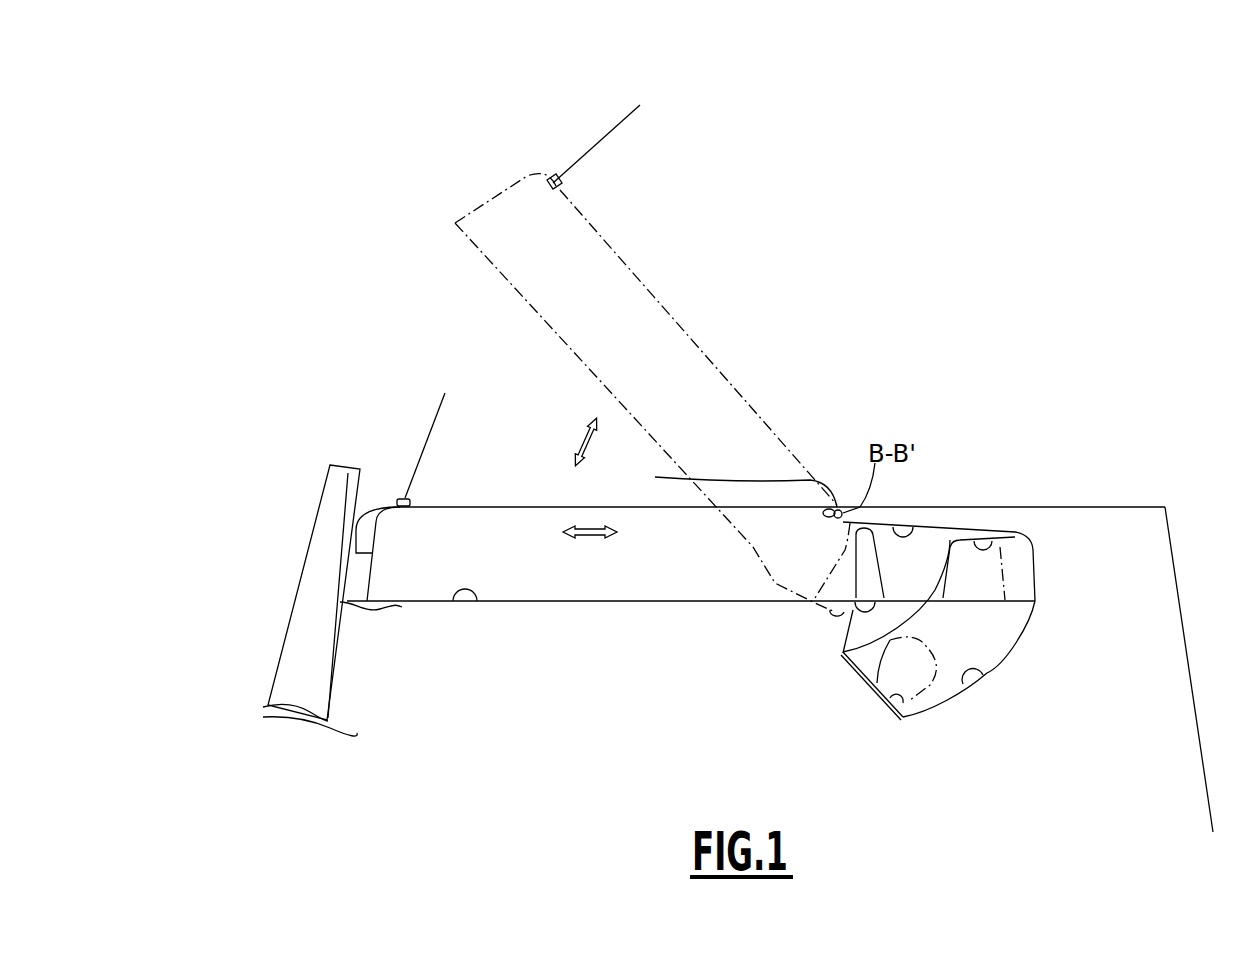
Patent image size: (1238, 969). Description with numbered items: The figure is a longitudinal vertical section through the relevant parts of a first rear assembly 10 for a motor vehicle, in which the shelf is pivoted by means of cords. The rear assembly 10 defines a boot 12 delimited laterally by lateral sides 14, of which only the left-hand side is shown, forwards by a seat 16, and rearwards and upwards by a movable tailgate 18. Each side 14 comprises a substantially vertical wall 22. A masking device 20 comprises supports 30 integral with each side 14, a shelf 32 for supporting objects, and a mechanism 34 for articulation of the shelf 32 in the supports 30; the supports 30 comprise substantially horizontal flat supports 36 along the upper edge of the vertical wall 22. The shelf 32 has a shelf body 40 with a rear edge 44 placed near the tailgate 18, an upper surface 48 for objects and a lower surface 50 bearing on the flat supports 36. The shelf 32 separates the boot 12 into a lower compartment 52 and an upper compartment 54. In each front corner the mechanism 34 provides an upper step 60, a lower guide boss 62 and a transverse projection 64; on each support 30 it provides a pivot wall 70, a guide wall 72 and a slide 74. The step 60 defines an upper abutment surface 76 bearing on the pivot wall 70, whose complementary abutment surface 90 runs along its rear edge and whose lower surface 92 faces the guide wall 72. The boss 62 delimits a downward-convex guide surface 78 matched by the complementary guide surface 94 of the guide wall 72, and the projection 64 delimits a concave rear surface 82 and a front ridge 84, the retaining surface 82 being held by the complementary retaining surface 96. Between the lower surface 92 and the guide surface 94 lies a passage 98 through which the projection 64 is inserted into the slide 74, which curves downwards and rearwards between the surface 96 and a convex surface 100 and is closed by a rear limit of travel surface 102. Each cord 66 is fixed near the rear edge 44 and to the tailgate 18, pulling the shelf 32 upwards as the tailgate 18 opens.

The rear assembly 10 is at (305, 227).
The boot 12 is at (480, 695).
The lateral side 14 is at (373, 655).
The seat 16 is at (1208, 697).
The tailgate 18 is at (343, 487).
The masking device 20 is at (500, 405).
The vertical wall 22 is at (294, 719).
The support 30 is at (555, 607).
The shelf 32 is at (773, 293).
The articulation mechanism 34 is at (1013, 425).
The flat support 36 is at (453, 602).
The shelf body 40 is at (523, 527).
The rear edge 44 is at (373, 553).
The upper surface 48 is at (478, 507).
The lower surface 50 is at (347, 602).
The lower compartment 52 is at (783, 746).
The upper compartment 54 is at (743, 341).
The upper step 60 is at (808, 442).
The lower guide boss 62 is at (812, 610).
The transverse projection 64 is at (1057, 572).
The cord 66 is at (593, 148).
The pivot wall 70 is at (953, 517).
The guide wall 72 is at (897, 612).
The slide 74 is at (965, 648).
The upper abutment surface 76 is at (728, 484).
The guide surface 78 is at (812, 603).
The concave rear surface 82 is at (1027, 545).
The front ridge 84 is at (1040, 602).
The complementary abutment surface 90 is at (830, 517).
The lower surface 92 is at (918, 520).
The complementary guide surface 94 is at (853, 612).
The complementary retaining surface 96 is at (890, 640).
The passage 98 is at (896, 576).
The convex surface 100 is at (967, 687).
The rear limit of travel surface 102 is at (903, 717).